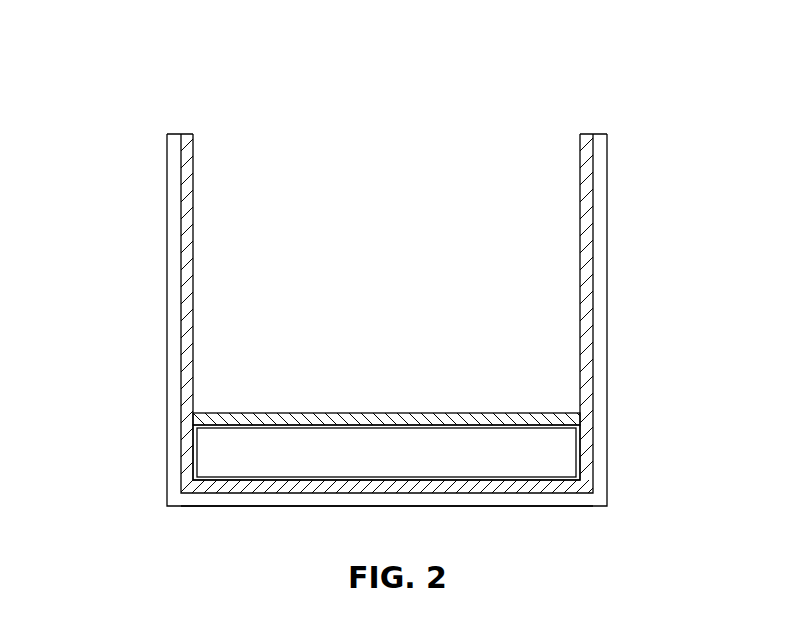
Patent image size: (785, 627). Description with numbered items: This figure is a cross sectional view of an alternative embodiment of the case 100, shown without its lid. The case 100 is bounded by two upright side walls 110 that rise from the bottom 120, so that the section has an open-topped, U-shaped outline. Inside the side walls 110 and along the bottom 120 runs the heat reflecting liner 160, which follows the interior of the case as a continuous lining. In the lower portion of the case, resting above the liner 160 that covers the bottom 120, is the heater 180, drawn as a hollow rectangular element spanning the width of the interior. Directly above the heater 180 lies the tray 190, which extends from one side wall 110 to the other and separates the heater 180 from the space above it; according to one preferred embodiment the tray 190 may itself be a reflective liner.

The case 100 is at (112, 84).
The side walls 110 is at (599, 197).
The heat reflecting liner 160 is at (585, 255).
The tray 190 is at (473, 415).
The heater 180 is at (565, 453).
The bottom 120 is at (485, 497).